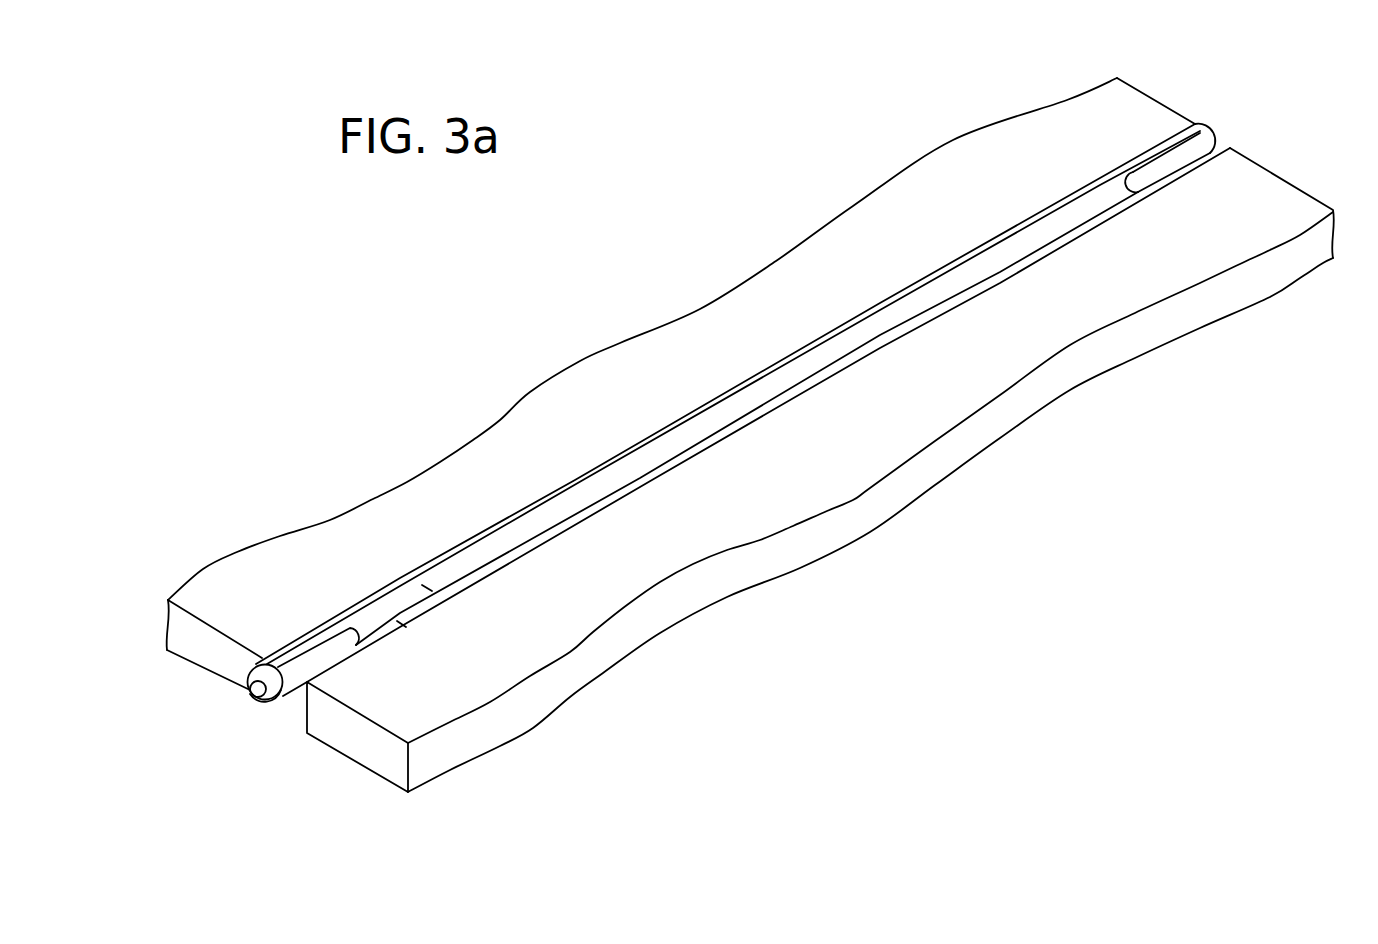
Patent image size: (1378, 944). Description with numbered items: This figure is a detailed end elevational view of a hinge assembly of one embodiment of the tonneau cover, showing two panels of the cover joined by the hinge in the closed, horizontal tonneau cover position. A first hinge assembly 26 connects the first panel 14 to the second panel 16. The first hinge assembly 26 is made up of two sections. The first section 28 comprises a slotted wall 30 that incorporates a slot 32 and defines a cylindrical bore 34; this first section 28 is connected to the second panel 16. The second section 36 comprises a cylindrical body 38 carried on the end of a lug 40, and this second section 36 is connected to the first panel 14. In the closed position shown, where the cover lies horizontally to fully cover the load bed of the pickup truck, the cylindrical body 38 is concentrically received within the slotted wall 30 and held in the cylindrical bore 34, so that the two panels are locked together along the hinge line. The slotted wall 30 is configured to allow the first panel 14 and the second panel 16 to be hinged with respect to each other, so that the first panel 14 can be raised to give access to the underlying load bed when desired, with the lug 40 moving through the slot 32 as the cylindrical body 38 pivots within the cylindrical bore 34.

The first panel 14 is at (690, 530).
The second panel 16 is at (647, 370).
The first hinge assembly 26 is at (1220, 130).
The first section 28 is at (287, 620).
The slotted wall 30 is at (294, 690).
The slot 32 is at (250, 676).
The cylindrical bore 34 is at (250, 692).
The second section 36 is at (377, 643).
The cylindrical body 38 is at (427, 588).
The lug 40 is at (405, 624).